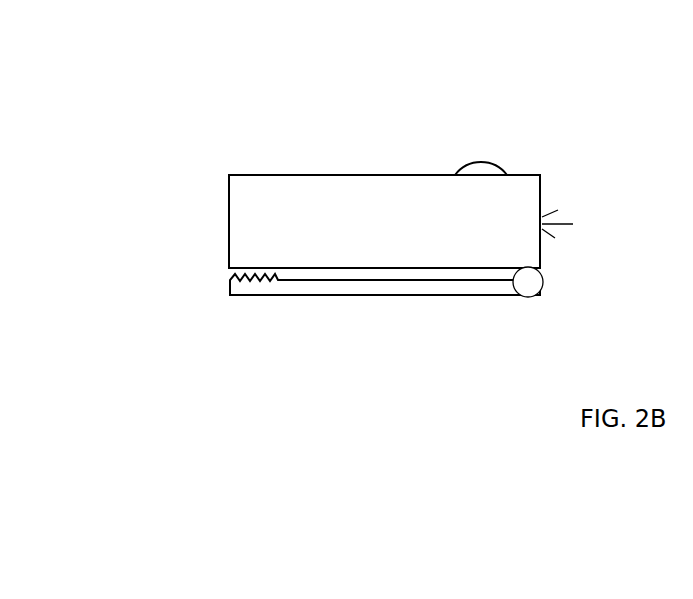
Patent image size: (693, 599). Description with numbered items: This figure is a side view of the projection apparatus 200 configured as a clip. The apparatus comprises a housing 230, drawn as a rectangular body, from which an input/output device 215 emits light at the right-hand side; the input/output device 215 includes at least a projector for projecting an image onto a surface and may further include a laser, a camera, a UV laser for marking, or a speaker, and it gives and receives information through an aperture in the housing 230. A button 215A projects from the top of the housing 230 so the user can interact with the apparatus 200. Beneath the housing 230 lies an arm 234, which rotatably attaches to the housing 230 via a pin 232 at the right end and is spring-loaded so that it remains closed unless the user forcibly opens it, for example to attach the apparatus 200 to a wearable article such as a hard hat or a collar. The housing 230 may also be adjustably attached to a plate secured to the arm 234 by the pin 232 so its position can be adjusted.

The projection apparatus 200 is at (231, 122).
The housing 230 is at (313, 175).
The button 215A is at (487, 163).
The input/output device 215 is at (550, 247).
The arm 234 is at (310, 296).
The pin 232 is at (527, 283).